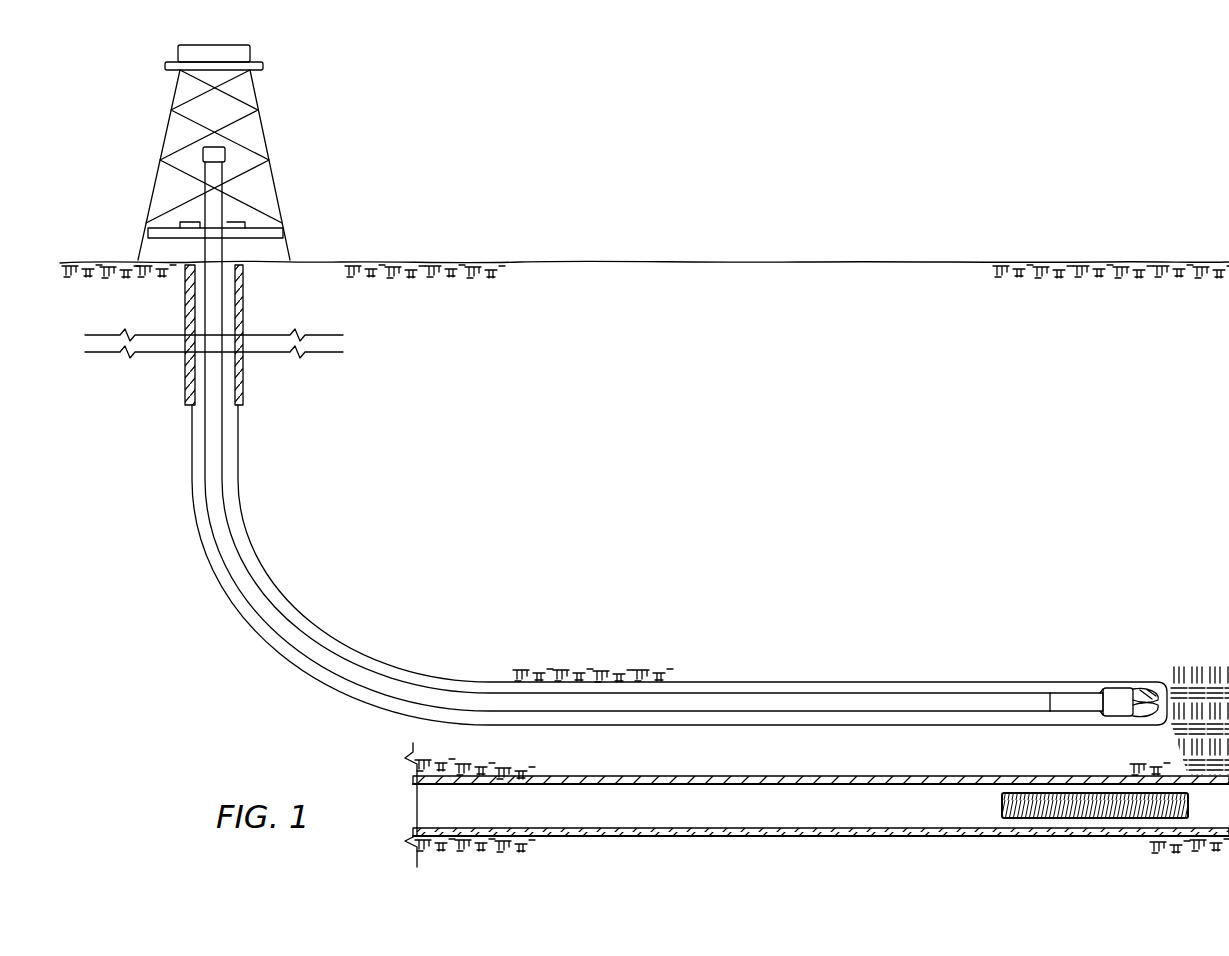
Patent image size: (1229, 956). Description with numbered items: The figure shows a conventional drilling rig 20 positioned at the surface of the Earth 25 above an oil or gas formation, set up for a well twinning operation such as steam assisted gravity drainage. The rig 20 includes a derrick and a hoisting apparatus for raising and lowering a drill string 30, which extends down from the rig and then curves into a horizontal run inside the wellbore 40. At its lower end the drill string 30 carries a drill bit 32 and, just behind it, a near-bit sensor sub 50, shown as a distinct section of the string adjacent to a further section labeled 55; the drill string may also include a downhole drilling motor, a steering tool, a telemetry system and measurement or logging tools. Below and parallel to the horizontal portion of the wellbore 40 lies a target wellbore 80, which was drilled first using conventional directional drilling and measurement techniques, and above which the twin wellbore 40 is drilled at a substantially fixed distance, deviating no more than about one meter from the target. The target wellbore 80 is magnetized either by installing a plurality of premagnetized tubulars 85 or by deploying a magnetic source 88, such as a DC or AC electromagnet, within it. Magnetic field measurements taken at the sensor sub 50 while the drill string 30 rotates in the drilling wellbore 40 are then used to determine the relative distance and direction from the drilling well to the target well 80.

The drilling rig 20 is at (265, 138).
The surface of the Earth 25 is at (373, 262).
The drill string 30 is at (213, 557).
The wellbore 40 is at (228, 603).
The near-bit sensor sub 50 is at (1057, 693).
The downhole tool 55 is at (1077, 702).
The drill bit 32 is at (1122, 690).
The target wellbore 80 is at (797, 810).
The premagnetized tubulars 85 is at (590, 830).
The magnetic source 88 is at (1002, 800).